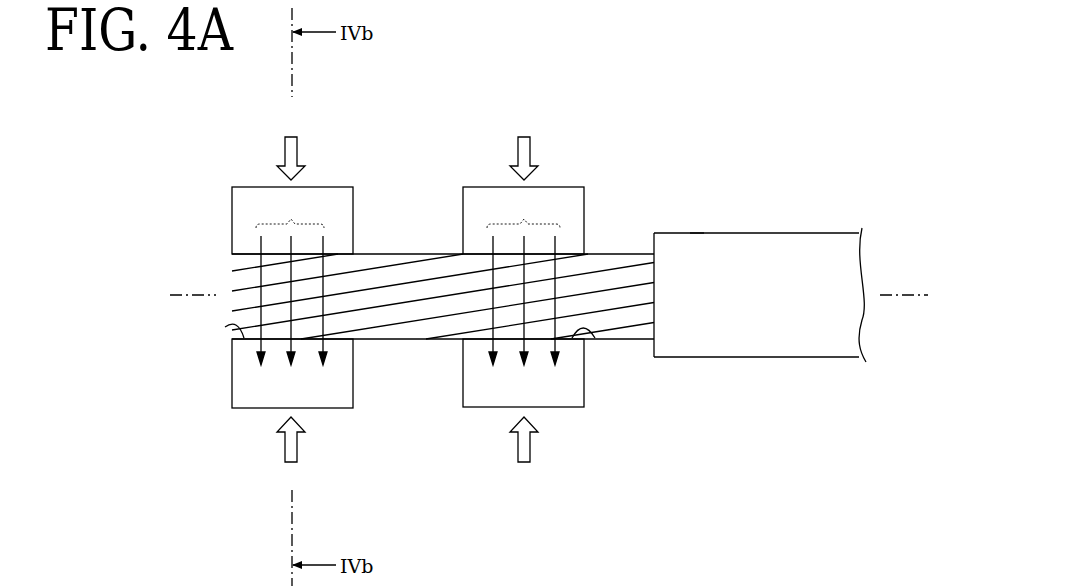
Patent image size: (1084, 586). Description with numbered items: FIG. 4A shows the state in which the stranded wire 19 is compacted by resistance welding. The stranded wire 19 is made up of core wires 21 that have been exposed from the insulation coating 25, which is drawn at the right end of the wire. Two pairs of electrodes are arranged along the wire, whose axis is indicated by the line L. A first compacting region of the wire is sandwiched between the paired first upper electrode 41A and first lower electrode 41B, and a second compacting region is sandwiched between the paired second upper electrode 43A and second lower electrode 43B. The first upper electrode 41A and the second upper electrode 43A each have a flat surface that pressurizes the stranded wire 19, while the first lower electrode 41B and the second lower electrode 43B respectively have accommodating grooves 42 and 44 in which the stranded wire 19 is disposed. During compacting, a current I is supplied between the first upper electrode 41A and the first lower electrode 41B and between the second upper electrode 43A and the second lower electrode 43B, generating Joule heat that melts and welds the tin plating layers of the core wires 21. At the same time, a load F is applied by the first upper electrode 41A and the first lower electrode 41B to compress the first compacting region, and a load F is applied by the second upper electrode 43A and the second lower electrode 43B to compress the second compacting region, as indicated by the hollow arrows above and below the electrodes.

The stranded wire 19 is at (697, 230).
The core wires 21 is at (425, 325).
The insulation coating 25 is at (752, 232).
The first upper electrode 41A is at (335, 187).
The first lower electrode 41B is at (333, 410).
The accommodating groove 42 is at (225, 327).
The second upper electrode 43A is at (568, 187).
The second lower electrode 43B is at (565, 410).
The accommodating groove 44 is at (595, 338).
The axis line L is at (183, 293).
The load F is at (407, 297).
The current I is at (291, 217).